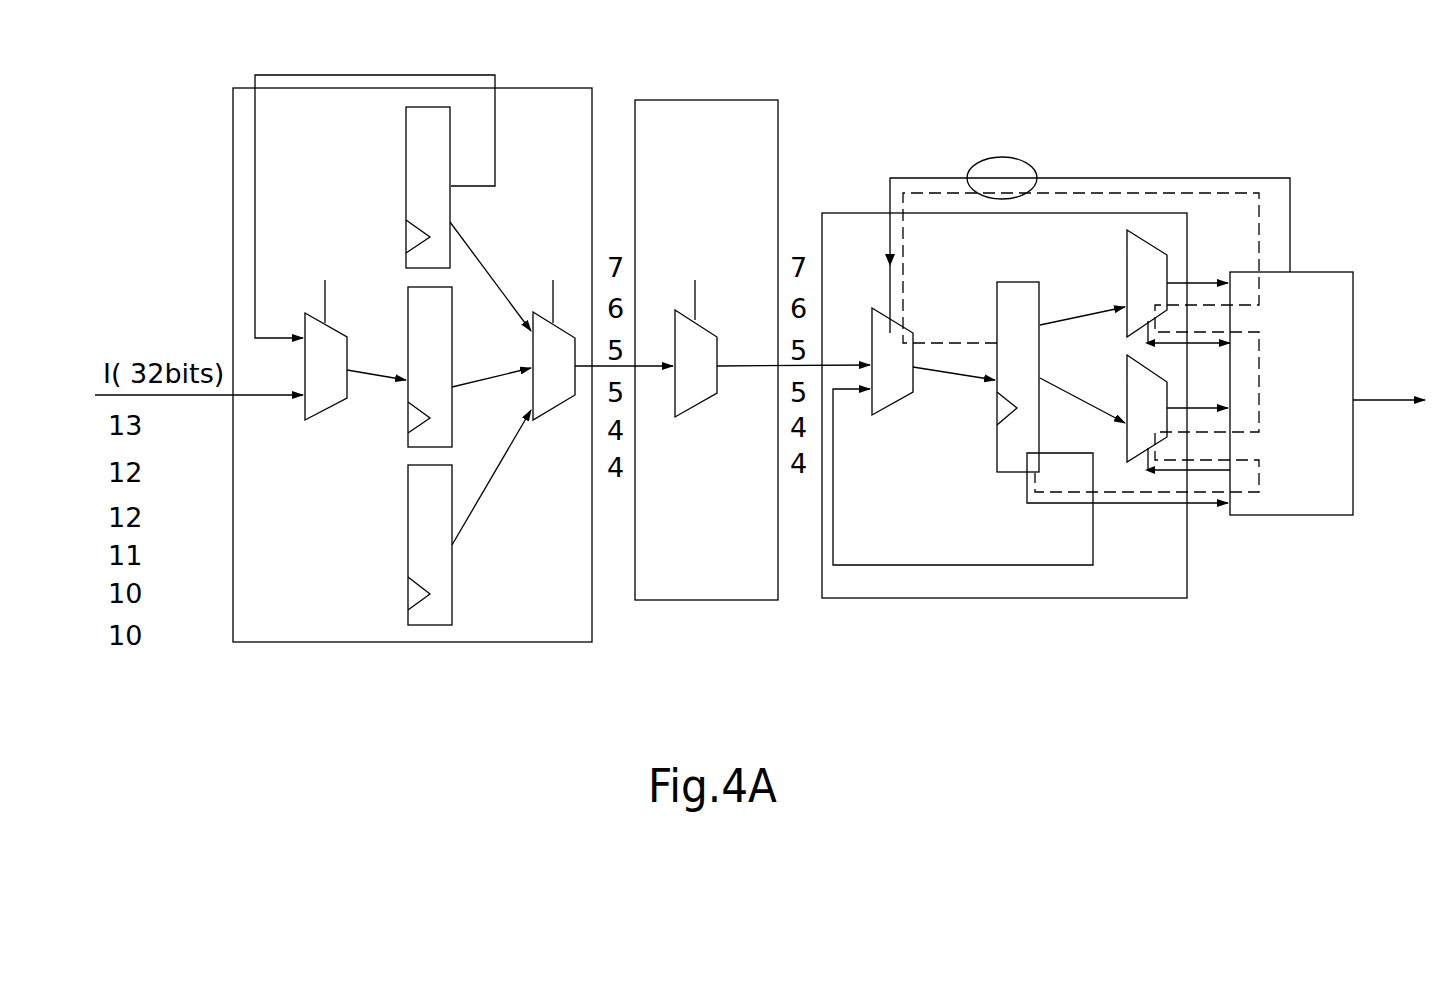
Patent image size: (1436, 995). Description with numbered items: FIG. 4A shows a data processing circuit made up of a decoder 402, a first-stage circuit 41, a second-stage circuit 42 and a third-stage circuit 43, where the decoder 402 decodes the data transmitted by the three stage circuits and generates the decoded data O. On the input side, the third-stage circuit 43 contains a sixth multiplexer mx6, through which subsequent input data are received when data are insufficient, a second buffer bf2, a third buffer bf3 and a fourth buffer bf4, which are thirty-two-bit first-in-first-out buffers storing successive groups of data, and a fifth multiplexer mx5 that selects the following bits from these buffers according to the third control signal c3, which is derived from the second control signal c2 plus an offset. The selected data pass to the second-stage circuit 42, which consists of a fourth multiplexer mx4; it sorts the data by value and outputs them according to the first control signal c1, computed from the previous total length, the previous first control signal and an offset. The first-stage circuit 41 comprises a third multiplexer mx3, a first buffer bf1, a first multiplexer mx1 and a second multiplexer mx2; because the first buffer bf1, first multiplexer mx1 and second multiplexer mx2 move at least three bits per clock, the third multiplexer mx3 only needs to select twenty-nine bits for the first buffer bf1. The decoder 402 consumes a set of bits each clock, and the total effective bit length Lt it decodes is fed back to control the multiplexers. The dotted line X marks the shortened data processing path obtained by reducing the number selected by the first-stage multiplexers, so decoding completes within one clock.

The third-stage circuit 43 is at (552, 88).
The second-stage circuit 42 is at (762, 100).
The first-stage circuit 41 is at (848, 212).
The decoder 402 is at (1312, 272).
The first multiplexer mx1 is at (1135, 370).
The second multiplexer mx2 is at (1135, 246).
The third multiplexer mx3 is at (893, 407).
The fourth multiplexer mx4 is at (697, 417).
The fifth multiplexer mx5 is at (558, 417).
The sixth multiplexer mx6 is at (330, 402).
The first buffer bf1 is at (1007, 287).
The second buffer bf2 is at (418, 493).
The third buffer bf3 is at (414, 310).
The fourth buffer bf4 is at (413, 133).
The first control signal c1 is at (698, 282).
The second control signal c2 is at (326, 284).
The third control signal c3 is at (556, 284).
The total effective bit length Lt is at (1087, 235).
The dotted line X is at (1262, 208).
The decoded data O is at (1389, 384).